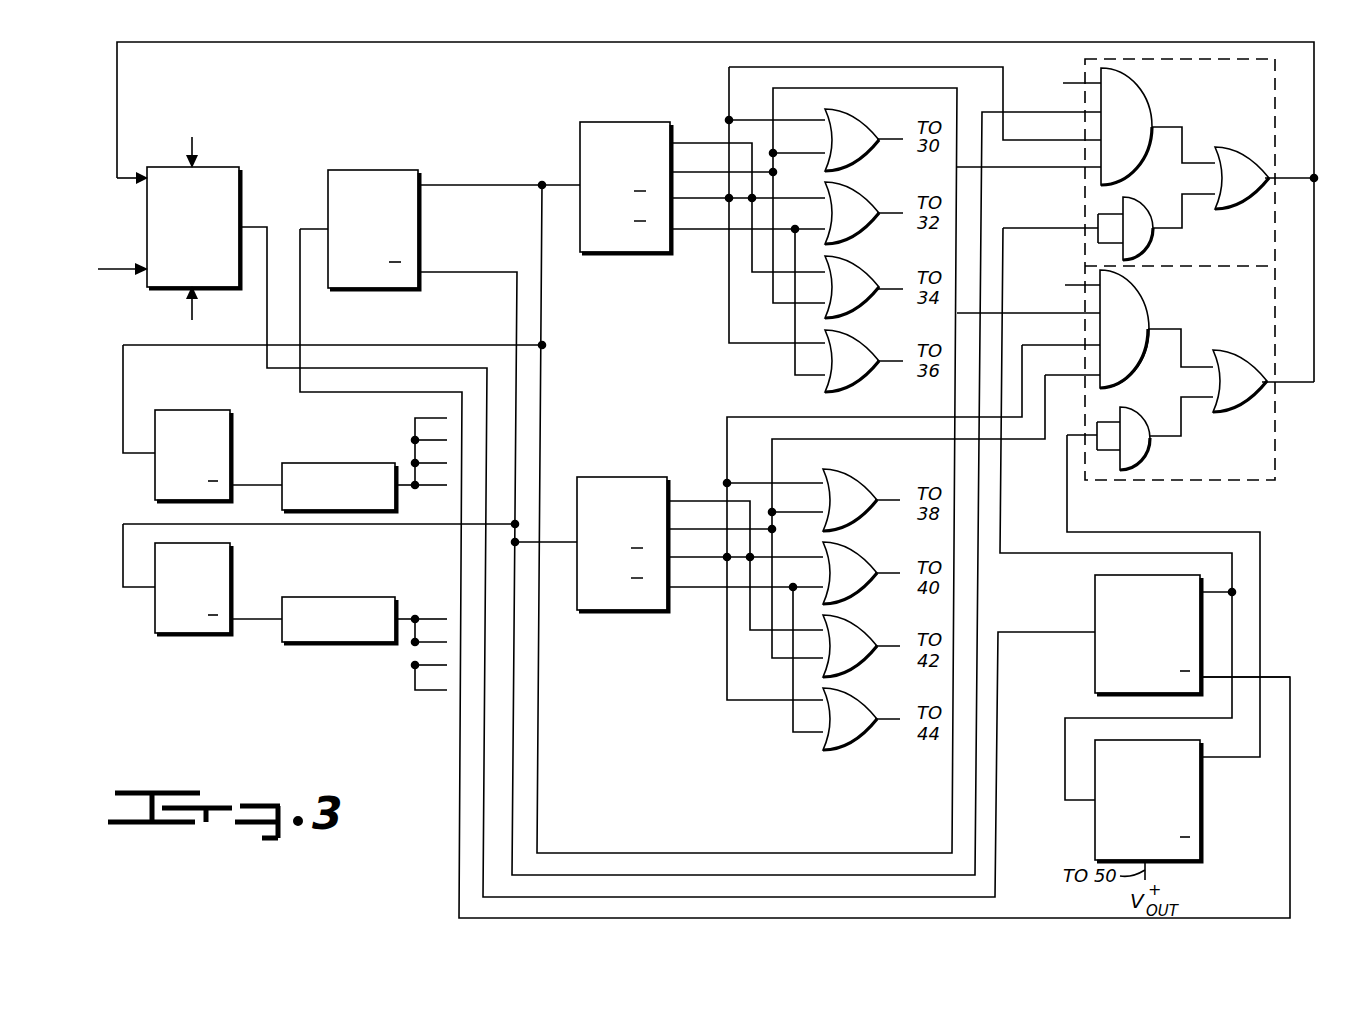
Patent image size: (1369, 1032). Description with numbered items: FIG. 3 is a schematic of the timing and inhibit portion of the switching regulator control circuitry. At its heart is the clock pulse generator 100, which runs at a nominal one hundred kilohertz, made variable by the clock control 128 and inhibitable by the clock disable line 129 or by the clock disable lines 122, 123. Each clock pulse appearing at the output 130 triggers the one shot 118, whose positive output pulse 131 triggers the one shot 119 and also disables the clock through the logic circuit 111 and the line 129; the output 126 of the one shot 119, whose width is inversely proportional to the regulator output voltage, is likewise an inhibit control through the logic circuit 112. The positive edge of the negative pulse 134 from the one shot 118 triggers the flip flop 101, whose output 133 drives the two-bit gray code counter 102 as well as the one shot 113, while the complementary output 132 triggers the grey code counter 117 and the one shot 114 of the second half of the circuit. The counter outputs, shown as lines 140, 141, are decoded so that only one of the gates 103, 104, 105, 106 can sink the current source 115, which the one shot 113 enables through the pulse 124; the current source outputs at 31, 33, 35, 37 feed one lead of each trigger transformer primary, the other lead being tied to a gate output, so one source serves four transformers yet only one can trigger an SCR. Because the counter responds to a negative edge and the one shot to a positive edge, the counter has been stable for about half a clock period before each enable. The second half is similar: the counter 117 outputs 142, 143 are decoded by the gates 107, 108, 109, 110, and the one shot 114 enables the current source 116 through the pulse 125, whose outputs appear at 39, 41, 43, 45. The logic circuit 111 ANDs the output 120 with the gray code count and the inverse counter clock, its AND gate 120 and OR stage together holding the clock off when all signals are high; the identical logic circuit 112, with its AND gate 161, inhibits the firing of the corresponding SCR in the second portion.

The clock pulse generator 100 is at (240, 167).
The flip flop 101 is at (396, 178).
The two-bit gray code counter 102 is at (640, 120).
The gate 103 is at (874, 126).
The gate 104 is at (874, 200).
The gate 105 is at (874, 275).
The gate 106 is at (870, 344).
The gate 107 is at (870, 482).
The gate 108 is at (872, 558).
The gate 109 is at (870, 631).
The gate 110 is at (870, 706).
The logic circuit 111 is at (1290, 88).
The logic circuit 112 is at (1276, 450).
The one shot 113 is at (200, 410).
The one shot 114 is at (178, 633).
The current source 115 is at (330, 463).
The current source 116 is at (330, 600).
The grey code counter 117 is at (634, 480).
The one shot 118 is at (1095, 593).
The one shot 119 is at (1095, 835).
The output of the circuit shown in FIG. 4 120 is at (1076, 84).
The clock disable line 122 is at (110, 266).
The clock disable line 123 is at (192, 305).
The pulse 124 is at (256, 482).
The line 125 is at (256, 616).
The output of one shot 119 126 is at (1232, 758).
The clock control 128 is at (198, 145).
The clock disable line 129 is at (117, 60).
The clock pulse output 130 is at (266, 228).
The output pulse of one shot 118 131 is at (1232, 560).
The output 132 is at (465, 272).
The output of flip flop 101 133 is at (482, 185).
The negative pulse 134 is at (1292, 678).
The line 140 is at (718, 138).
The line 141 is at (716, 172).
The line 142 is at (716, 500).
The line 143 is at (715, 531).
The AND gate 161 is at (1076, 286).
The current source output connection 31 is at (426, 404).
The current source output connection 33 is at (434, 432).
The current source output connection 35 is at (434, 454).
The current source output connection 37 is at (426, 488).
The output line 39 is at (428, 606).
The output line 41 is at (426, 645).
The output line 43 is at (426, 668).
The output line 45 is at (426, 693).